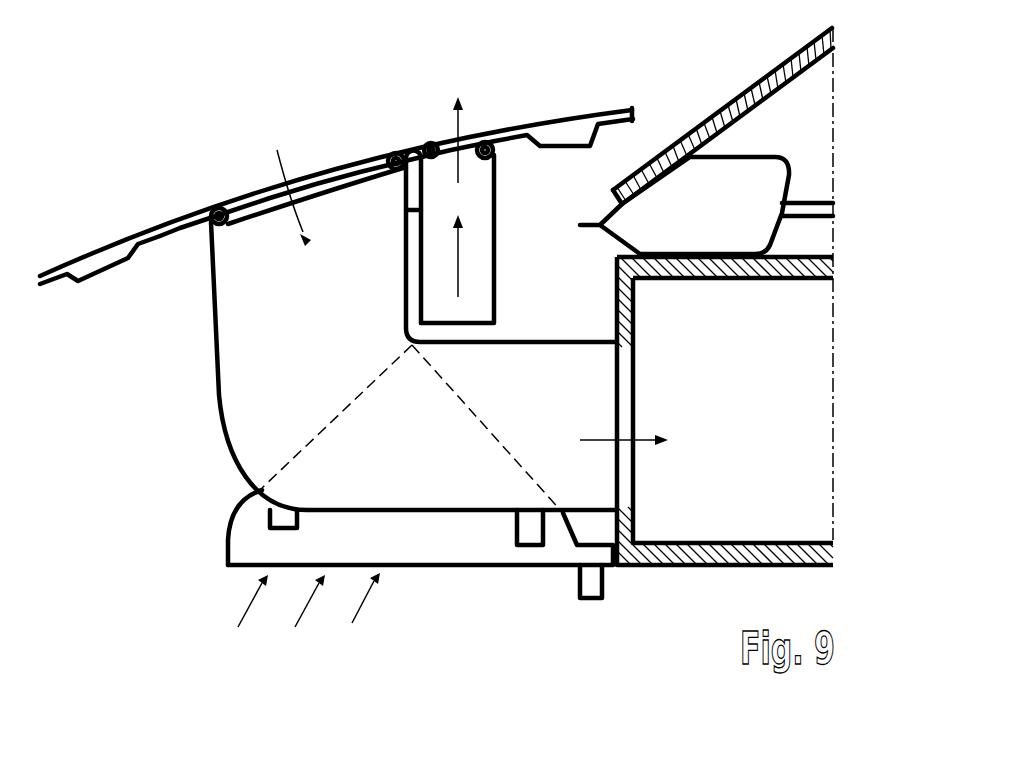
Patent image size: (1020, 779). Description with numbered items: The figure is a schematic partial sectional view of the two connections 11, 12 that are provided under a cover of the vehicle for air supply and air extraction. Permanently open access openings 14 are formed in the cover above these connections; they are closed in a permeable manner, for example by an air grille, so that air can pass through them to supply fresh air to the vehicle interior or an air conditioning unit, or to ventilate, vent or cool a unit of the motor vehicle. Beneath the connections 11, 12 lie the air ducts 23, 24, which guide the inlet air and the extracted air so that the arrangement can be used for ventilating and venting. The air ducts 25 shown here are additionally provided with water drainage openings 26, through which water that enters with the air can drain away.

The connection 11 is at (350, 207).
The connection 12 is at (477, 175).
The permanently open access opening 14 is at (257, 203).
The air duct 23 is at (498, 282).
The air duct 24 is at (218, 347).
The air duct 25 is at (230, 532).
The water drainage opening 26 is at (530, 532).